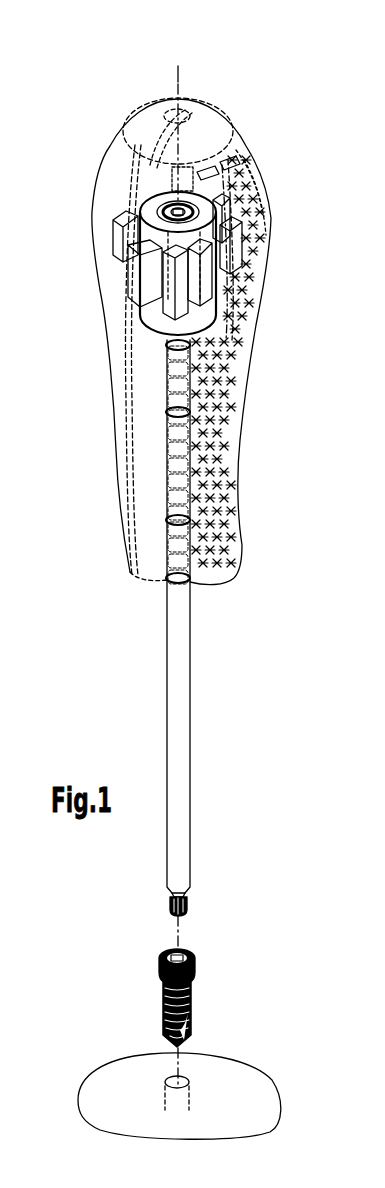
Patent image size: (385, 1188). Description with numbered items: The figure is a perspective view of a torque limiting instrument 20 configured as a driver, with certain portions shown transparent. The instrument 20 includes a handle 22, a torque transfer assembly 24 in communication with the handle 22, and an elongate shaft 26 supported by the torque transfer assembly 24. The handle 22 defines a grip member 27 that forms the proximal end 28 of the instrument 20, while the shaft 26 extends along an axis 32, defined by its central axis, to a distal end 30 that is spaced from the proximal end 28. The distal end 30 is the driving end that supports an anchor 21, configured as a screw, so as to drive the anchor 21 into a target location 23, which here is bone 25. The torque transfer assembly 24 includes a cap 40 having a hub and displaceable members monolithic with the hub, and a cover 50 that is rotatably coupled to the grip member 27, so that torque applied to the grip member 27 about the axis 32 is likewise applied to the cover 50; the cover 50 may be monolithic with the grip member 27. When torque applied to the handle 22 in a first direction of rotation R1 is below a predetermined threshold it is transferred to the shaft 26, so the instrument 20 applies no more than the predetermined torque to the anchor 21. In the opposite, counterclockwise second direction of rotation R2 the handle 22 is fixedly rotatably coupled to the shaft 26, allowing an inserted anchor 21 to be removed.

The torque limiting instrument 20 is at (302, 122).
The anchor 21 is at (163, 1000).
The handle 22 is at (100, 345).
The target location 23 is at (205, 1088).
The torque transfer assembly 24 is at (114, 289).
The bone 25 is at (122, 1092).
The shaft 26 is at (185, 716).
The grip member 27 is at (98, 150).
The proximal end 28 is at (118, 117).
The distal end 30 is at (205, 900).
The axis 32 is at (180, 85).
The cap 40 is at (275, 457).
The cover 50 is at (255, 212).
The first direction of rotation R1 is at (217, 42).
The second direction of rotation R2 is at (220, 56).